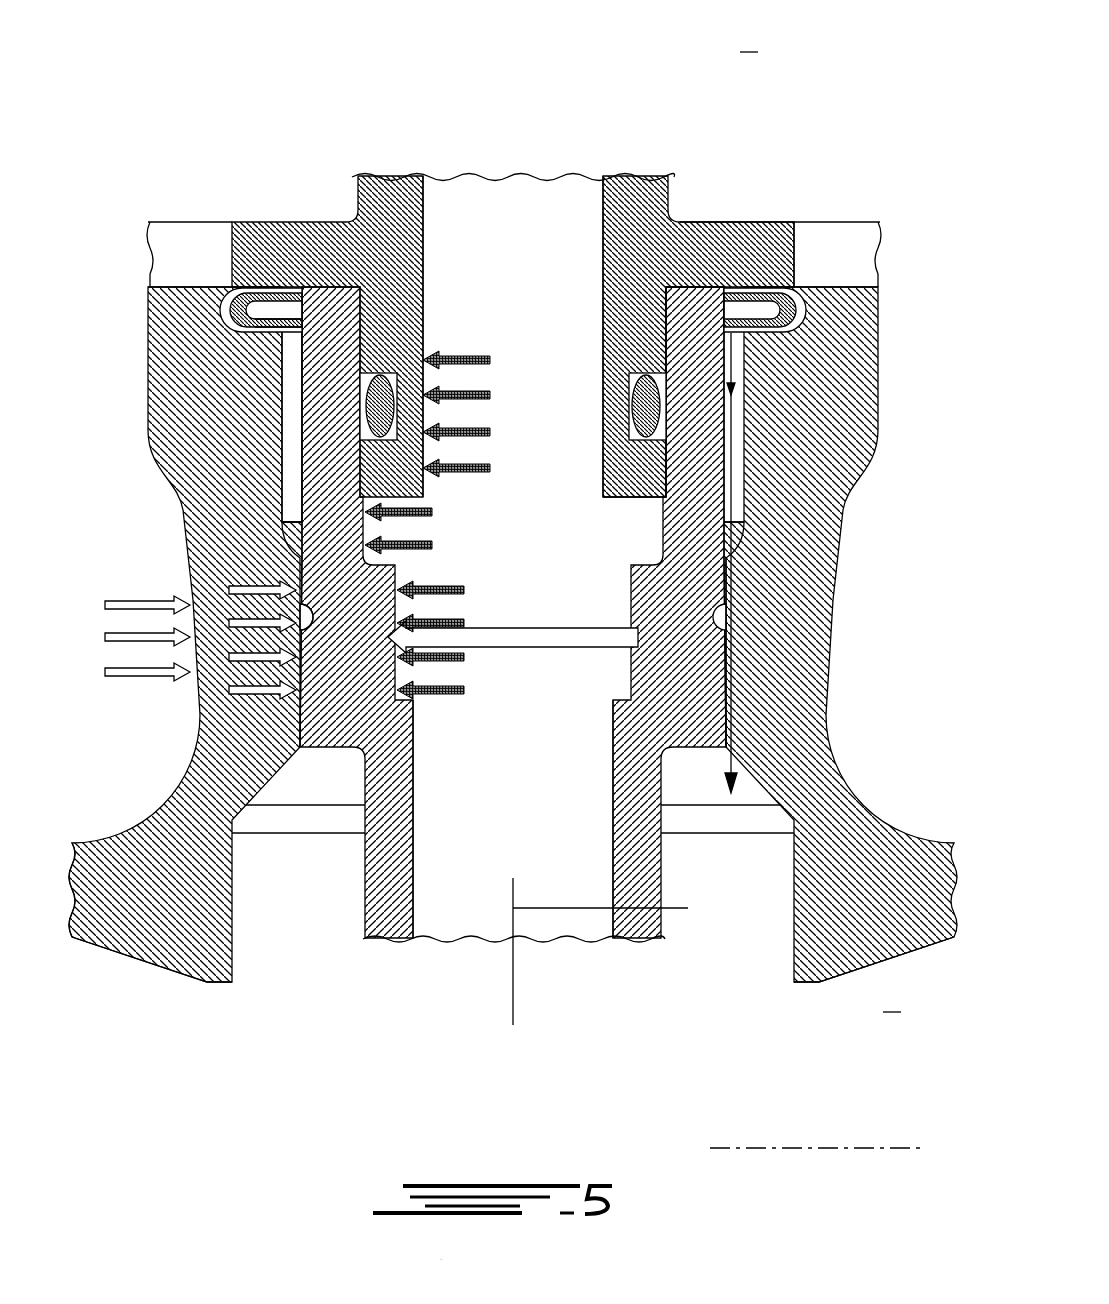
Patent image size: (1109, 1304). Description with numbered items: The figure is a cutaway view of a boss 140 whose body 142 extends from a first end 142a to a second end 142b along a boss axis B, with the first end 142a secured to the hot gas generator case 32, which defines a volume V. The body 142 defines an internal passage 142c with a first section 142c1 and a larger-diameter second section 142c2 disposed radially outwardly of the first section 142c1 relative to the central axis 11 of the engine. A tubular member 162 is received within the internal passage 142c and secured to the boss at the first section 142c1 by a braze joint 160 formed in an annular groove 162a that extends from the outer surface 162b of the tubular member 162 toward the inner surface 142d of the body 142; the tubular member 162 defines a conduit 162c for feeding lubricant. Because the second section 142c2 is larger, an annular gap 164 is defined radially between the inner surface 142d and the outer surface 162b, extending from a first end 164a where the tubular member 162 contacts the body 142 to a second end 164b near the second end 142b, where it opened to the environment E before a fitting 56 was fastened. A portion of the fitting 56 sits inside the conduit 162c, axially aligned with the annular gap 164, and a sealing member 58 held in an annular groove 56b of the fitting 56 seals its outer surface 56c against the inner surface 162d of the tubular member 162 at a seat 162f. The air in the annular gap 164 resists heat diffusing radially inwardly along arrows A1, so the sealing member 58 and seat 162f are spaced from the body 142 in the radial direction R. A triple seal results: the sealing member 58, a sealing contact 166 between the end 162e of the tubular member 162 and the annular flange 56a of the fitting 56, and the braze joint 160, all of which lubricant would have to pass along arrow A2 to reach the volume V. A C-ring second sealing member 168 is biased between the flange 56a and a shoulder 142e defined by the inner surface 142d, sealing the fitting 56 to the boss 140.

The boss 140 is at (830, 130).
The fitting 56 is at (608, 302).
The annular flange 56a is at (760, 243).
The annular groove 56b is at (603, 400).
The outer surface 56c is at (794, 392).
The sealing member 58 is at (633, 378).
The second sealing member 168 is at (212, 300).
The sealing contact 166 is at (701, 306).
The end of the tubular member 162e is at (707, 287).
The annular gap 164 is at (433, 441).
The first end of the annular gap 164a is at (300, 560).
The second end of the annular gap 164b is at (287, 322).
The tubular member 162 is at (530, 551).
The annular groove 162a is at (302, 807).
The braze joint 160 is at (313, 622).
The outer surface 162b is at (640, 652).
The conduit 162c is at (503, 820).
The inner surface 162d is at (667, 360).
The seat 162f is at (360, 395).
The body 142 is at (524, 633).
The first end 142a is at (190, 850).
The second end 142b is at (860, 312).
The internal passage 142c is at (732, 845).
The first section 142c1 is at (732, 643).
The second section 142c2 is at (275, 440).
The inner surface 142d is at (727, 687).
The shoulder 142e is at (798, 342).
The gas generator case 32 is at (95, 940).
The central axis 11 is at (785, 1148).
The arrows A1 is at (240, 660).
The arrow A2 is at (728, 718).
The boss axis B is at (515, 982).
The radial direction R is at (672, 910).
The environment E is at (749, 38).
The volume V is at (892, 998).